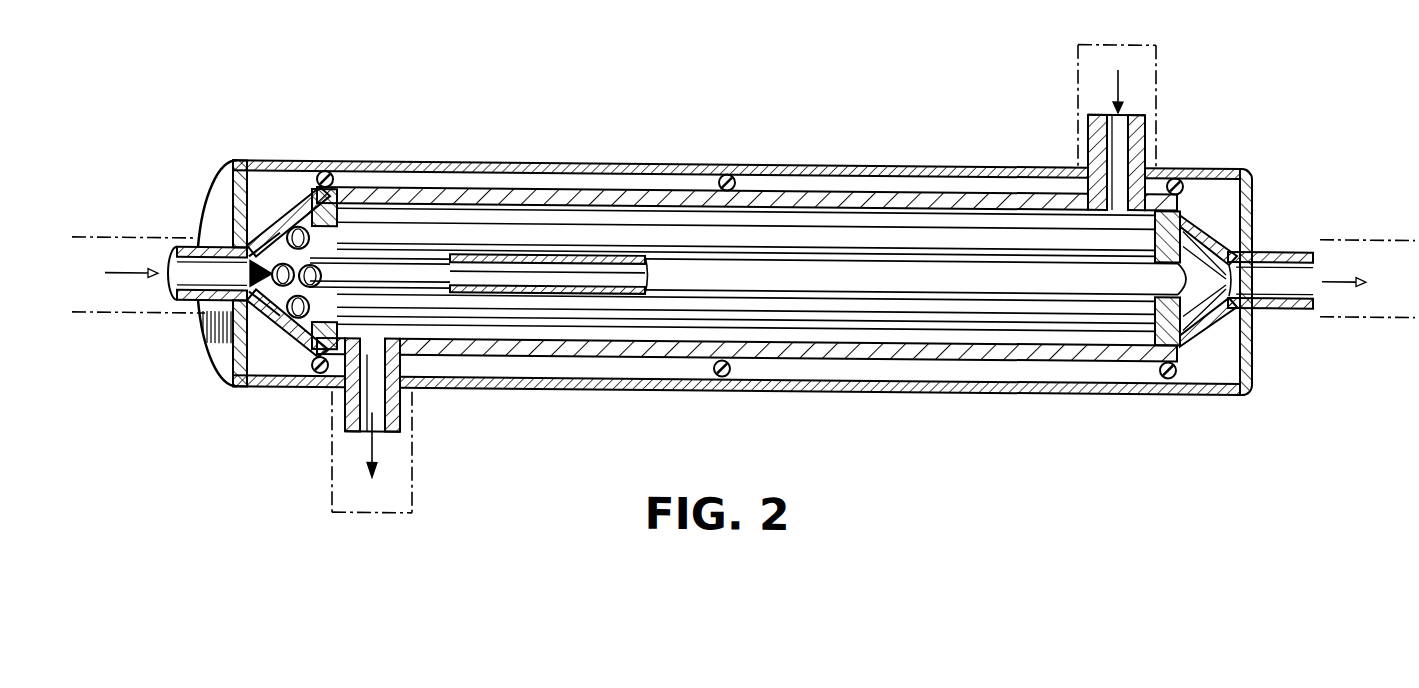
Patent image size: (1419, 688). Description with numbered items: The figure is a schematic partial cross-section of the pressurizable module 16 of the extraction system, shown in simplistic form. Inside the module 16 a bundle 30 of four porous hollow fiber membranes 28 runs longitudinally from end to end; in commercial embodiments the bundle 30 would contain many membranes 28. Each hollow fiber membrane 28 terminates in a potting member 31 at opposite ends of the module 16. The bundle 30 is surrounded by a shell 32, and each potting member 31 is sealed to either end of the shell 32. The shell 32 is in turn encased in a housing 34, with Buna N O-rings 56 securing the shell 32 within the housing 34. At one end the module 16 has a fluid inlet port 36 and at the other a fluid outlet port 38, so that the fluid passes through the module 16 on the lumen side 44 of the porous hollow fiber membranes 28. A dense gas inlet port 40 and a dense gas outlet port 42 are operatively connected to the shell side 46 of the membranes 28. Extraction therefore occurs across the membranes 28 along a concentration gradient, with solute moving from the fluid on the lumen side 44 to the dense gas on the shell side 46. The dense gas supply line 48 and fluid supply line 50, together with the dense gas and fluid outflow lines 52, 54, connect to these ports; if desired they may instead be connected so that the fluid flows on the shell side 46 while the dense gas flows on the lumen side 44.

The pressurizable module 16 is at (843, 146).
The porous hollow fiber membranes 28 is at (915, 238).
The bundle 30 is at (641, 218).
The potting member 31 is at (305, 194).
The shell 32 is at (555, 189).
The housing 34 is at (463, 162).
The fluid inlet port 36 is at (190, 245).
The fluid outlet port 38 is at (1305, 242).
The dense gas inlet port 40 is at (1097, 124).
The dense gas outlet port 42 is at (398, 438).
The lumen side 44 is at (530, 277).
The shell side 46 is at (652, 326).
The dense gas supply line 48 is at (1078, 57).
The fluid supply line 50 is at (104, 316).
The dense gas outflow line 52 is at (332, 491).
The fluid outflow line 54 is at (1327, 309).
The Buna N O-rings 56 is at (733, 180).